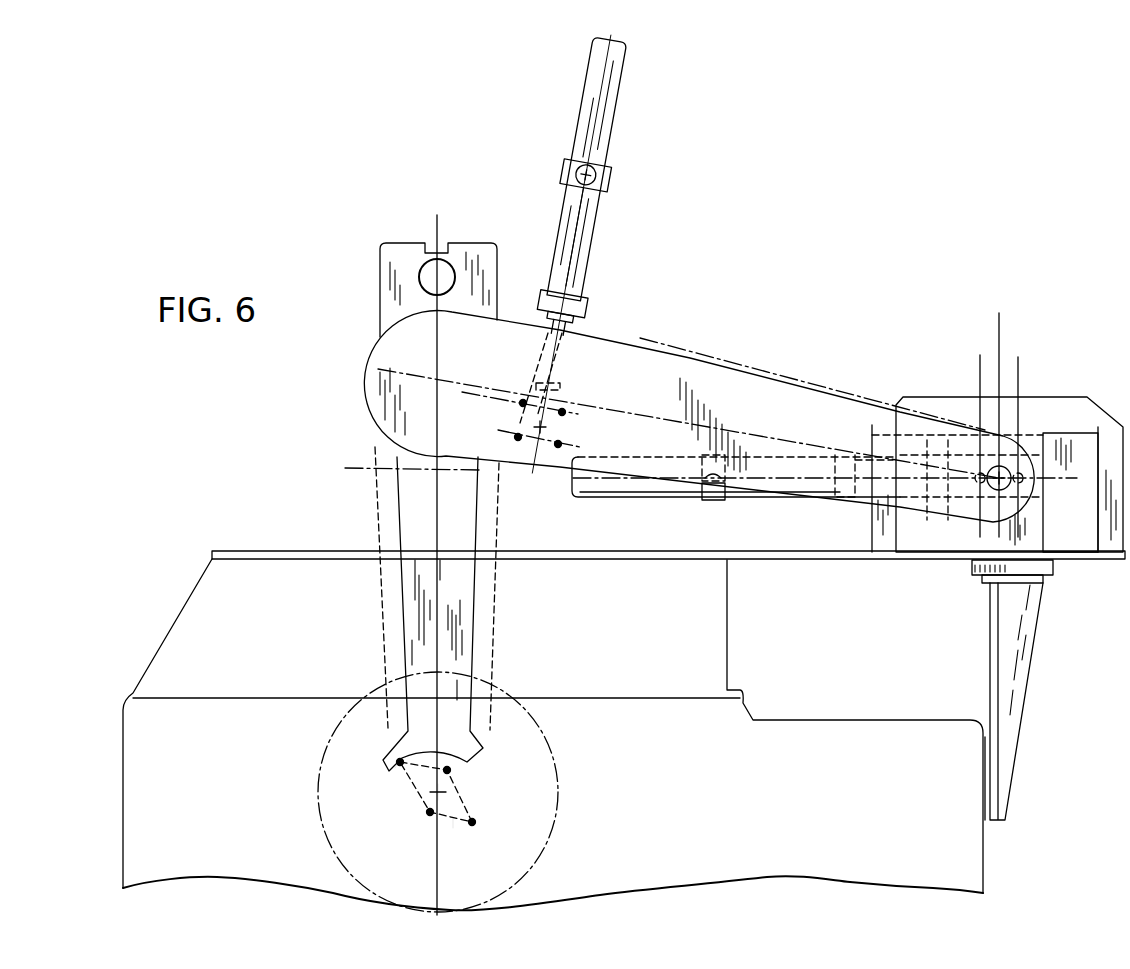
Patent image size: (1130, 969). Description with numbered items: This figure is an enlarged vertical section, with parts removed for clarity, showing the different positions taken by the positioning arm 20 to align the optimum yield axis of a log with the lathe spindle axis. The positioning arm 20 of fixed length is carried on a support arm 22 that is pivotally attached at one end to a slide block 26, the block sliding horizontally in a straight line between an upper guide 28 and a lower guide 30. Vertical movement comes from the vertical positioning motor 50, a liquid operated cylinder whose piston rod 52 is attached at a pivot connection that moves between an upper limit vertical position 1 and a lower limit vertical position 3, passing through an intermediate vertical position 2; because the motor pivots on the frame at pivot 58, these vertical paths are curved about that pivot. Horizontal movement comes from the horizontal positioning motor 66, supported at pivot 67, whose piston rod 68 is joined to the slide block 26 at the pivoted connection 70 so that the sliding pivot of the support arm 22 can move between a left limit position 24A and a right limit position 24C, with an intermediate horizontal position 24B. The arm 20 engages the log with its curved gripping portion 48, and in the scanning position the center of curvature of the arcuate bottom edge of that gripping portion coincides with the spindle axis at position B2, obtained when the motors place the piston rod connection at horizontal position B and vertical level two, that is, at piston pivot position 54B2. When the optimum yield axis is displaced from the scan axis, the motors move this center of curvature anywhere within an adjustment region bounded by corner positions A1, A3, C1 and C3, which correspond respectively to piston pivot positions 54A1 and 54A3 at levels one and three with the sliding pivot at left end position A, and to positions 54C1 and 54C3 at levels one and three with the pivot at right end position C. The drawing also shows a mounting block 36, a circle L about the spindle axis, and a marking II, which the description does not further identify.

The upper limit vertical position 1 is at (517, 403).
The intermediate vertical position 2 is at (507, 422).
The lower limit vertical position 3 is at (510, 437).
The positioning arm 20 is at (395, 511).
The support arm 22 is at (687, 347).
The left limit position of pivot 24A is at (977, 475).
The intermediate horizontal position of pivot 24B is at (1013, 480).
The right limit position of pivot 24C is at (1017, 477).
The slide block 26 is at (1040, 520).
The upper guide 28 is at (1085, 433).
The lower guide 30 is at (1070, 540).
The pivot block 36 is at (419, 277).
The gripping portion 48 is at (392, 758).
The vertical positioning motor 50 is at (633, 177).
The piston rod 52 is at (619, 262).
The piston pivot position A1 54A1 is at (523, 403).
The piston pivot position A3 54A3 is at (518, 437).
The piston pivot position B2 54B2 is at (558, 444).
The piston pivot position C1 54C1 is at (562, 412).
The piston pivot position C3 54C3 is at (558, 447).
The pivot 58 is at (638, 102).
The horizontal positioning motor 66 is at (643, 497).
The pivot 67 is at (713, 497).
The piston rod 68 is at (880, 460).
The pivoted connection 70 is at (990, 490).
The left end position A is at (978, 434).
The horizontal position B is at (997, 413).
The right end position C is at (1017, 434).
The corner position A-1 A1 is at (397, 766).
The corner position A-3 A3 is at (428, 814).
The position B-2 B2 is at (436, 792).
The corner position C-1 C1 is at (450, 770).
The corner position C-3 C3 is at (475, 822).
The locus circle L is at (543, 847).
The position II is at (457, 820).